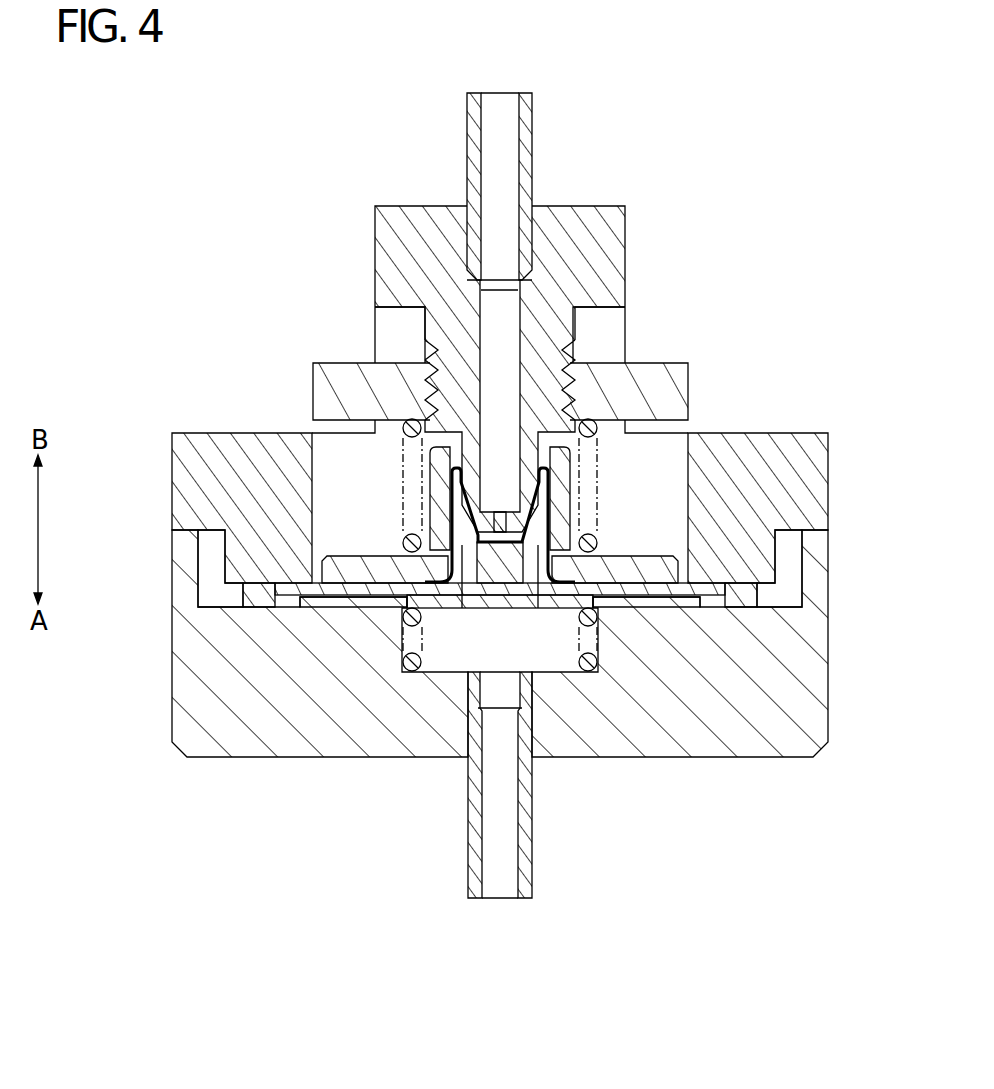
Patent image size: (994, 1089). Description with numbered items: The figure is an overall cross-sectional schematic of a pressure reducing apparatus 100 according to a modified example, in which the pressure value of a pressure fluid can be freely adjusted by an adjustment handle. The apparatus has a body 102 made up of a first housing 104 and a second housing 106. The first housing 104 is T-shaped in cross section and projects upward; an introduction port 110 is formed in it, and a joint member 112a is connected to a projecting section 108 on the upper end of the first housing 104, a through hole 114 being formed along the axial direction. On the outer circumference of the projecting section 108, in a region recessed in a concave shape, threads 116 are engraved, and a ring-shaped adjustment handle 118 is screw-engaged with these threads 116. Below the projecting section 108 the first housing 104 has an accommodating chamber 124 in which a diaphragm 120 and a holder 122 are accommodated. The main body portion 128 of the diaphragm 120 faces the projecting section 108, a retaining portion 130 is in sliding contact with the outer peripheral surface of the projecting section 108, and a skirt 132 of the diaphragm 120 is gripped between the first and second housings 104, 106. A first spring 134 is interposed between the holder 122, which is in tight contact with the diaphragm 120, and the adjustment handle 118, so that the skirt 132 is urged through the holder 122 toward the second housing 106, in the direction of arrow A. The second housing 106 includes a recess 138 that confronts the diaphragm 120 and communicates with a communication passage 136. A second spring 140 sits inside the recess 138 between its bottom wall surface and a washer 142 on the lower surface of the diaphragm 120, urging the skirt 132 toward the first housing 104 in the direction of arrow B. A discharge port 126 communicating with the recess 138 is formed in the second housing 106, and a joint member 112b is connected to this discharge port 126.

The pressure reducing apparatus 100 is at (799, 70).
The body 102 is at (769, 356).
The first housing 104 is at (376, 228).
The second housing 106 is at (173, 681).
The projecting section 108 is at (610, 238).
The introduction port 110 is at (527, 237).
The joint member 112a is at (521, 133).
The joint member 112b is at (472, 866).
The through hole 114 is at (515, 342).
The threads 116 is at (433, 340).
The adjustment handle 118 is at (675, 395).
The diaphragm 120 is at (657, 582).
The holder 122 is at (362, 575).
The accommodating chamber 124 is at (323, 470).
The discharge port 126 is at (498, 715).
The main body portion 128 is at (492, 588).
The retaining portion 130 is at (456, 482).
The skirt 132 is at (684, 602).
The first spring 134 is at (407, 434).
The communication passage 136 is at (580, 502).
The recess 138 is at (446, 660).
The second spring 140 is at (593, 670).
The washer 142 is at (547, 590).